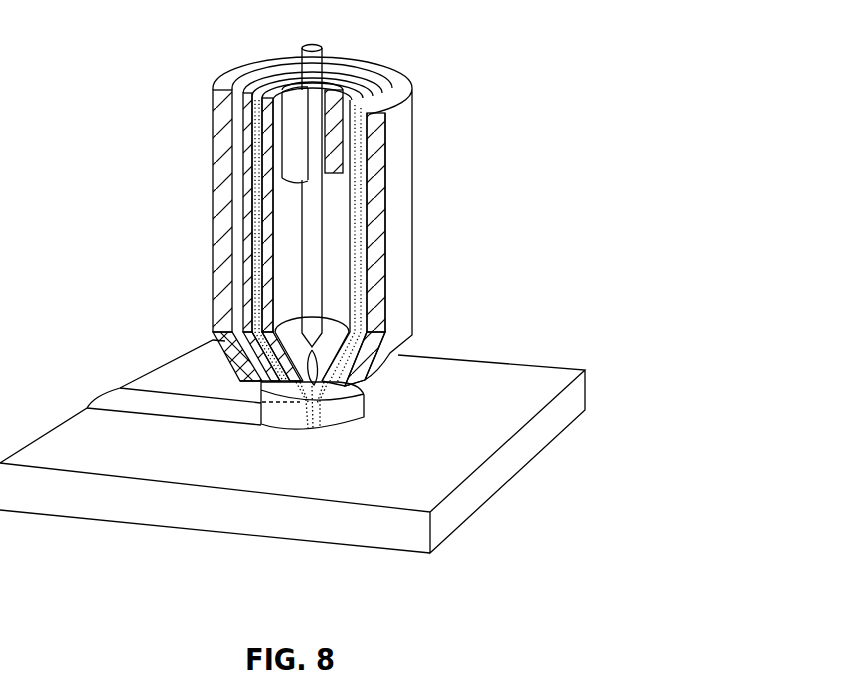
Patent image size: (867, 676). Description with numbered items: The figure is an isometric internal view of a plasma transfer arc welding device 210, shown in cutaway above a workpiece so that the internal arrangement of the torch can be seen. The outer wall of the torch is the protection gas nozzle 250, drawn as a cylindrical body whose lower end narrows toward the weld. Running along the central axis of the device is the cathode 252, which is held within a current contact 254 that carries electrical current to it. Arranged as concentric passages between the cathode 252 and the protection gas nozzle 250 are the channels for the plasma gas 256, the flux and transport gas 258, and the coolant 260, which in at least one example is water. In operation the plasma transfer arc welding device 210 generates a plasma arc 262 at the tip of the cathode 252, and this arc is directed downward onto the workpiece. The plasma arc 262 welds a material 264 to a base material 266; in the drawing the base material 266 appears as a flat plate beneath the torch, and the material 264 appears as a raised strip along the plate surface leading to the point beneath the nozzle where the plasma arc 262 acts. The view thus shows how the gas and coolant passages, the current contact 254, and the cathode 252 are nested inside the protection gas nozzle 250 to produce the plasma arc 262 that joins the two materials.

The plasma transfer arc welding device 210 is at (333, 328).
The protection gas nozzle 250 is at (411, 82).
The cathode 252 is at (312, 131).
The current contact 254 is at (282, 147).
The plasma gas 256 is at (273, 225).
The flux and transport gas 258 is at (253, 262).
The coolant 260 is at (262, 303).
The plasma arc 262 is at (285, 403).
The material 264 is at (252, 415).
The base material 266 is at (172, 378).